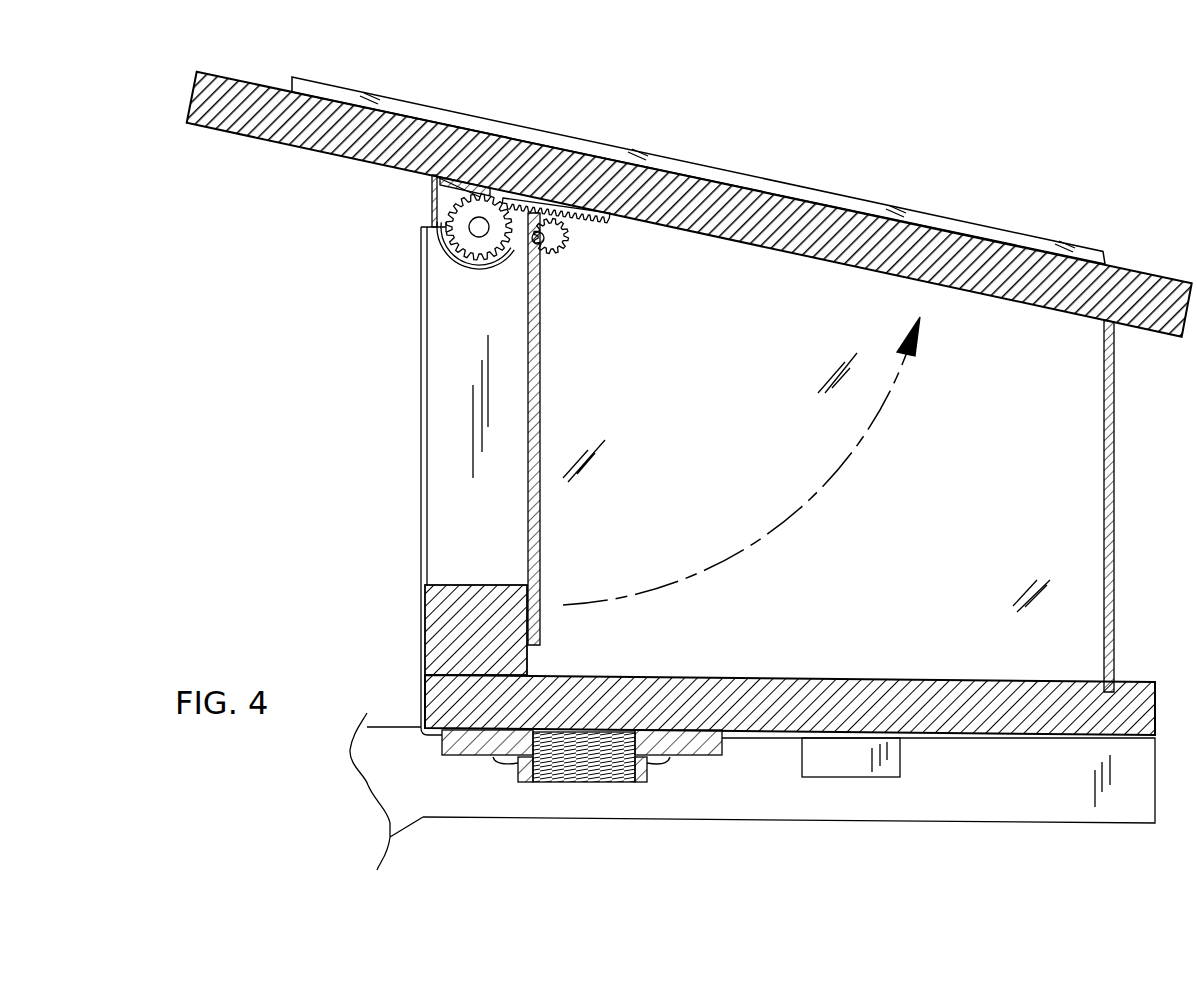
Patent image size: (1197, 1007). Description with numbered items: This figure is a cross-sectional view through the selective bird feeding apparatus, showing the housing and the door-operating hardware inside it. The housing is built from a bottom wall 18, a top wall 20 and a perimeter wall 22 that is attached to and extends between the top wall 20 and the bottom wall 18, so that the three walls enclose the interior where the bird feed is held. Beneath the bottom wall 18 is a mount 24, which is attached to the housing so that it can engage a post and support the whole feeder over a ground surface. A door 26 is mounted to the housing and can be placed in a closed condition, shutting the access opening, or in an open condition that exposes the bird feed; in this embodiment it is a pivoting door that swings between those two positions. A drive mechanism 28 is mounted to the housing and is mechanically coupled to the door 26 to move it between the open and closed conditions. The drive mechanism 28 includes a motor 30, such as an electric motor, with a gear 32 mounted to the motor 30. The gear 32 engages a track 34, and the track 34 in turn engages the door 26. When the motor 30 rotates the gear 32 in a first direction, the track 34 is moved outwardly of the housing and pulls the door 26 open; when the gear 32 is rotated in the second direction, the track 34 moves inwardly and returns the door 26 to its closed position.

The bottom wall 18 is at (1128, 690).
The top wall 20 is at (952, 245).
The perimeter wall 22 is at (1115, 516).
The mount 24 is at (647, 778).
The door 26 is at (527, 480).
The drive mechanism 28 is at (392, 232).
The motor 30 is at (440, 191).
The gear 32 is at (472, 250).
The track 34 is at (590, 227).